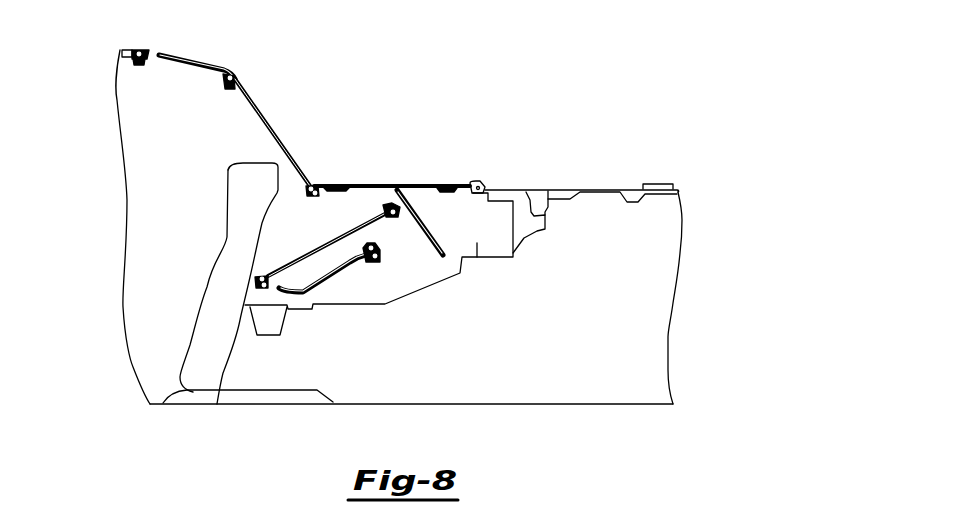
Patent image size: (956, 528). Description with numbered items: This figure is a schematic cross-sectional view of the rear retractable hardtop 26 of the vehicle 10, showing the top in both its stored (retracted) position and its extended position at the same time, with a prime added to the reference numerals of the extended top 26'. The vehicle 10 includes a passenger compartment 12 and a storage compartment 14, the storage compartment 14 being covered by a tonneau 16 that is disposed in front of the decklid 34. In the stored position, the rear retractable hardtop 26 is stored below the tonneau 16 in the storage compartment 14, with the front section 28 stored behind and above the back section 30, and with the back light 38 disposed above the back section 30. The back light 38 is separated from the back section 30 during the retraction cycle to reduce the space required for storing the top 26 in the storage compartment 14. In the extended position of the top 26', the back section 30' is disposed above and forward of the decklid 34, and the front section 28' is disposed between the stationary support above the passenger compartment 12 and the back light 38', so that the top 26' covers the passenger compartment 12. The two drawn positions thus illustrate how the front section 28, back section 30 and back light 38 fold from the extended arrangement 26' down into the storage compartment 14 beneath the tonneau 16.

The vehicle 10 is at (108, 227).
The passenger compartment 12 is at (137, 308).
The storage compartment 14 is at (413, 293).
The tonneau 16 is at (414, 182).
The rear retractable hardtop 26 is at (374, 159).
The rear retractable hardtop in extended position 26' is at (202, 98).
The front section 28 is at (445, 199).
The front section in extended position 28' is at (102, 47).
The back section 30 is at (344, 267).
The back section in extended position 30' is at (197, 44).
The decklid 34 is at (562, 188).
The back light 38 is at (327, 244).
The back light in extended position 38' is at (292, 137).